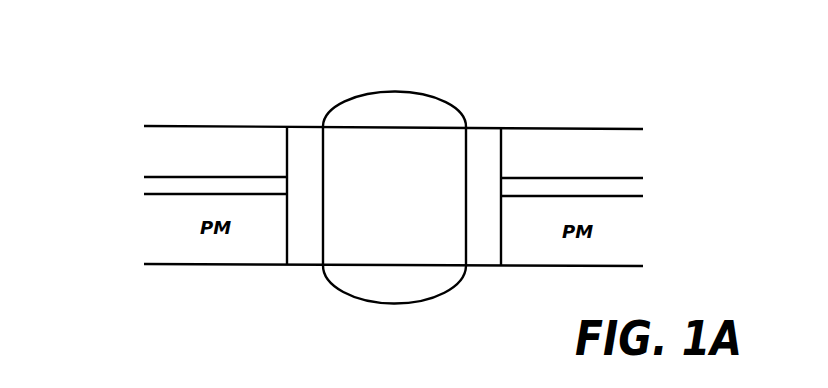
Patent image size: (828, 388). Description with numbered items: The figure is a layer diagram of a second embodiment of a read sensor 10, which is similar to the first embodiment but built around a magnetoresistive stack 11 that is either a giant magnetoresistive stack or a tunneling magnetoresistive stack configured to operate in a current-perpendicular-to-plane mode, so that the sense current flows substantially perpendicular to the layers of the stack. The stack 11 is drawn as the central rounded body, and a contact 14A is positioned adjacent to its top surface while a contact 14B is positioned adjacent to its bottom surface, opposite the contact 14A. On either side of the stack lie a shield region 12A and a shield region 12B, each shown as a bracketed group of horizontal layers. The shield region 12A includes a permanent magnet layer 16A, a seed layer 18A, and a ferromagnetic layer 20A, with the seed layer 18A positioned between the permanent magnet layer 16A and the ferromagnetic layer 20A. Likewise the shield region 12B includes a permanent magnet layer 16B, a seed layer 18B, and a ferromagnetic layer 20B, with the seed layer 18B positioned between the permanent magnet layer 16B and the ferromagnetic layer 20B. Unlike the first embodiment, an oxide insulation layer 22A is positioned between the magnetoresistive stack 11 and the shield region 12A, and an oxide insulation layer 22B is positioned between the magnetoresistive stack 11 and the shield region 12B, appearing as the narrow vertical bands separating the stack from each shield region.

The read sensor 10 is at (247, 59).
The magnetoresistive stack 11 is at (415, 143).
The shield region 12A is at (60, 125).
The shield region 12B is at (755, 130).
The contact 14A is at (360, 105).
The contact 14B is at (398, 290).
The permanent magnet layer 16A is at (182, 228).
The permanent magnet layer 16B is at (622, 233).
The seed layer 18A is at (163, 185).
The seed layer 18B is at (623, 188).
The ferromagnetic layer 20A is at (182, 150).
The ferromagnetic layer 20B is at (615, 154).
The oxide insulation layer 22A is at (305, 253).
The oxide insulation layer 22B is at (482, 252).